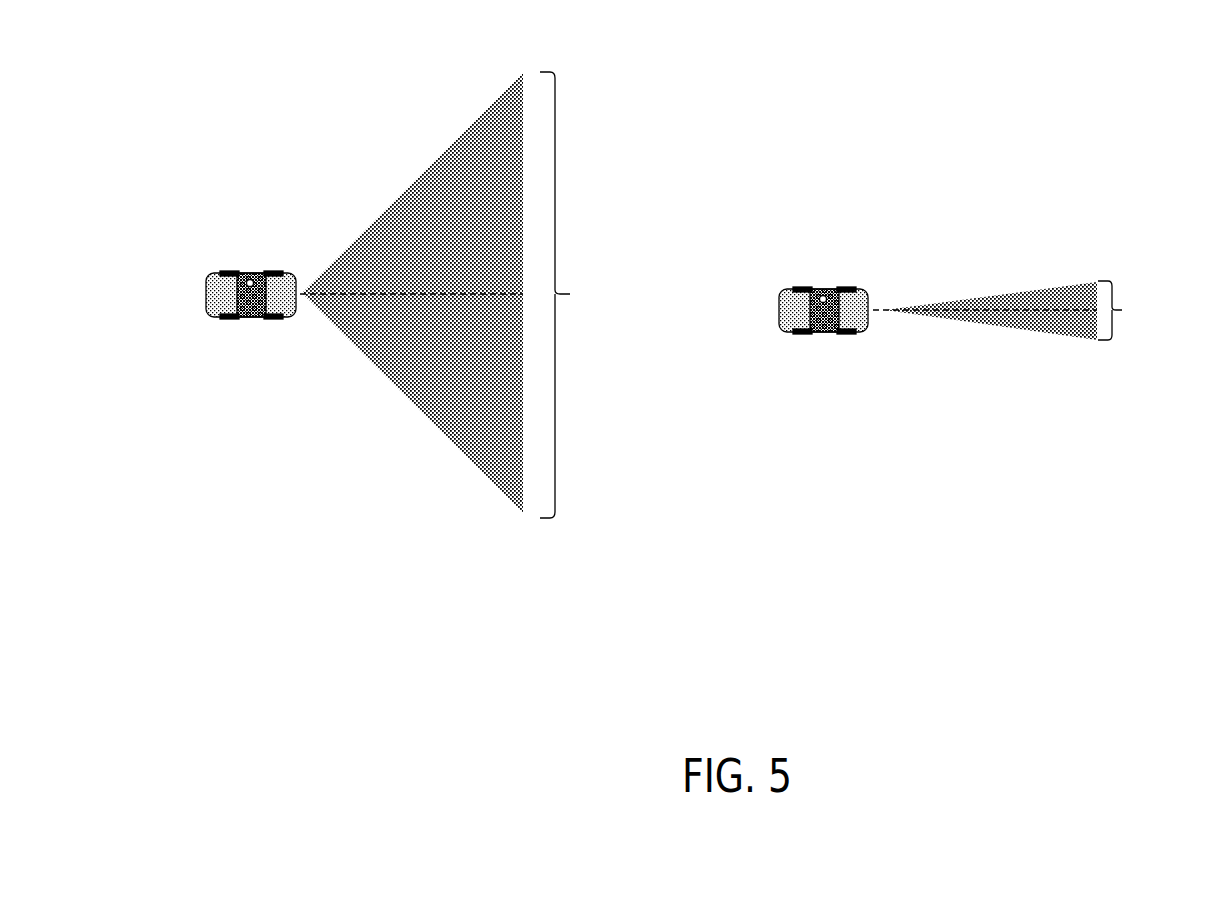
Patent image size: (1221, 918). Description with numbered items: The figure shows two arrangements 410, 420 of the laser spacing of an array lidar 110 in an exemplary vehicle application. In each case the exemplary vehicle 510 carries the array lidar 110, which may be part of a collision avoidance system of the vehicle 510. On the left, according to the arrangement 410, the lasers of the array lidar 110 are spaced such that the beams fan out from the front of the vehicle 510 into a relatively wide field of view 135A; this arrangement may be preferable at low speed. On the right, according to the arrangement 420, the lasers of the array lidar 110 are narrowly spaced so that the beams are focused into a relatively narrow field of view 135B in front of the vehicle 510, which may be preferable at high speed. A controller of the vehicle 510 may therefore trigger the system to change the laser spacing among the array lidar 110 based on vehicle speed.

The vehicle 510 is at (232, 252).
The array lidar 110 is at (305, 270).
The arrangement 410 is at (418, 115).
The arrangement 420 is at (1065, 230).
The wide field of view 135A is at (589, 295).
The narrow field of view 135B is at (1142, 310).